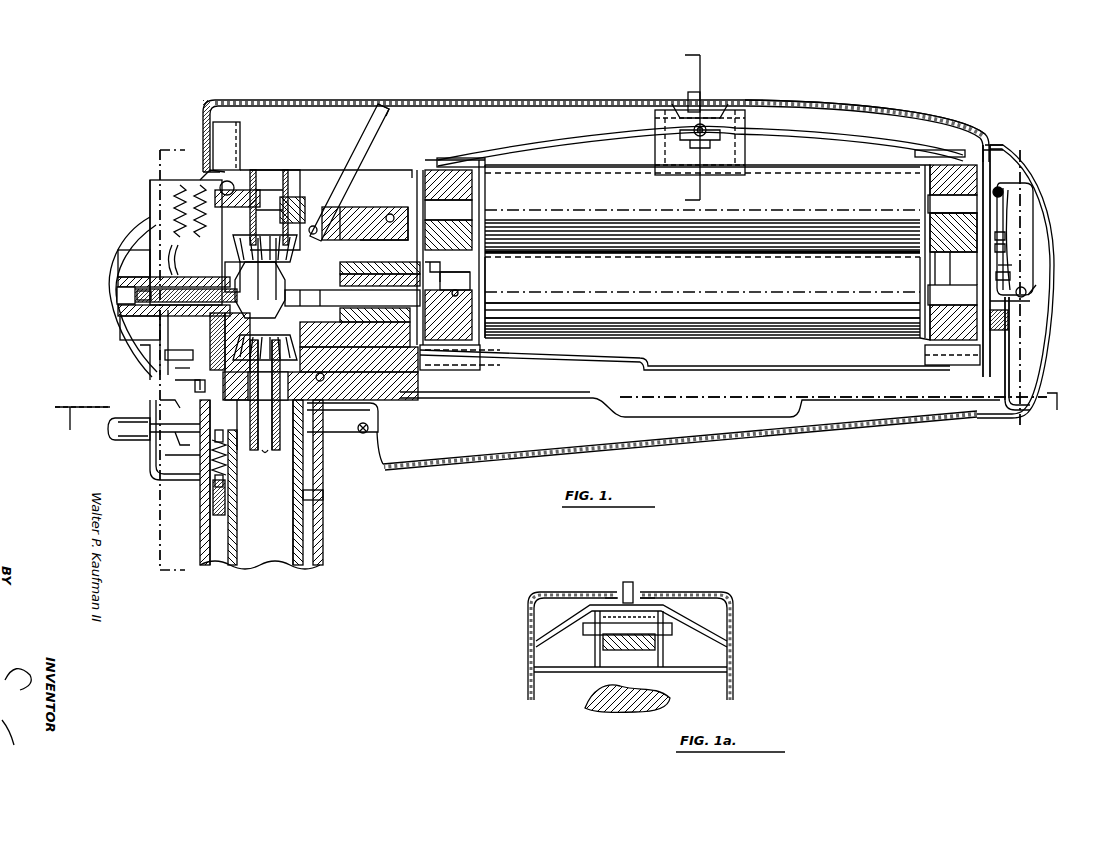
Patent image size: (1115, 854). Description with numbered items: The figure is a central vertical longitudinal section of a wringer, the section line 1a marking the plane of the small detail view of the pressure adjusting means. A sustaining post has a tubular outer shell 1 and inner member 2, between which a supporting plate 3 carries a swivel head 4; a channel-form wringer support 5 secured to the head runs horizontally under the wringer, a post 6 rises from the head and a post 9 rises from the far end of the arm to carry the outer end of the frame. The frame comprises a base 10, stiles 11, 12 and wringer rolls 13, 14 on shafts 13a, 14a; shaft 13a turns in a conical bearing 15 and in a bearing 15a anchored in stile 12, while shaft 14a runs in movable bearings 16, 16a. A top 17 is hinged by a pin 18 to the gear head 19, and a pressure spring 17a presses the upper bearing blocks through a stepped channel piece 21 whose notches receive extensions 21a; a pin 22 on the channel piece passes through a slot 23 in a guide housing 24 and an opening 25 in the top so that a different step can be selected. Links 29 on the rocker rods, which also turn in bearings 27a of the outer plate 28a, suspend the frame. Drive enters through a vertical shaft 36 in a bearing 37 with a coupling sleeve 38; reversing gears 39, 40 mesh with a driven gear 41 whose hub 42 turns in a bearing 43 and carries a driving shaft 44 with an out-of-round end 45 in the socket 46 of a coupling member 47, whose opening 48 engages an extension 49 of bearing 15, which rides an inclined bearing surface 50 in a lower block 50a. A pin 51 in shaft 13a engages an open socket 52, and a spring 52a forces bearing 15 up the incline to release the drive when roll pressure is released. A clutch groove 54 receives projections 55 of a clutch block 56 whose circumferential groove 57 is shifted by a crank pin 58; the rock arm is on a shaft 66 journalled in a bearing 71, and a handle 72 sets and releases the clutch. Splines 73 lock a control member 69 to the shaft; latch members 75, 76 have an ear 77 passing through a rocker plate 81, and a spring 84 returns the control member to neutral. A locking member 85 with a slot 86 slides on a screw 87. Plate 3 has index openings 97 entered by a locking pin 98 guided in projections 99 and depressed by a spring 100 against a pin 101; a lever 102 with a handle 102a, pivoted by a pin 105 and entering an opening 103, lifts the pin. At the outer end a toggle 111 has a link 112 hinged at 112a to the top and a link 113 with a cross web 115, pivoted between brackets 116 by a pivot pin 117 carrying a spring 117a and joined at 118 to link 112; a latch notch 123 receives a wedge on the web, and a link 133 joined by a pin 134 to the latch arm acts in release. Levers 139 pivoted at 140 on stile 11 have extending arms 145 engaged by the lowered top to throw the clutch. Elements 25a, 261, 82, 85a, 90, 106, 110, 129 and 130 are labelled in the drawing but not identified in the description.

In FIG. 1, the outer shell 1 is at (325, 545).
In FIG. 1, the inner member 2 is at (555, 416).
In FIG. 1, the supporting plate 3 is at (323, 495).
In FIG. 1, the swivel head 4 is at (305, 440).
In FIG. 1, the wringer support 5 is at (455, 470).
In FIG. 1, the post 6 is at (200, 470).
In FIG. 1, the post 9 is at (1012, 382).
In FIG. 1, the base 10 is at (585, 358).
In FIG. 1, the stile 11 is at (458, 158).
In FIG. 1, the stile 12 is at (930, 152).
In FIG. 1, the wringer roll 13 is at (690, 318).
In FIG. 1, the shaft 13a is at (935, 295).
In FIG. 1, the wringer roll 14 is at (770, 178).
In FIG. 1, the shaft 14a is at (940, 202).
In FIG. 1, the bearing 15 is at (472, 270).
In FIG. 1, the bearing 15a is at (940, 345).
In FIG. 1, the movable bearing 16 is at (472, 235).
In FIG. 1, the movable bearing 16a is at (935, 222).
In FIG. 1, the top 17 is at (838, 100).
In FIG. 1, the pressure spring 17a is at (582, 145).
In FIG. 1, the pin 18 is at (234, 182).
In FIG. 1, the gear head 19 is at (290, 195).
In FIG. 1, the channel piece 21 is at (655, 121).
In FIG. 1a, the channel piece 21 is at (585, 670).
In FIG. 1a, the extensions 21a is at (583, 635).
In FIG. 1, the pin 22 is at (698, 92).
In FIG. 1a, the pin 22 is at (632, 584).
In FIG. 1, the slot 23 is at (704, 125).
In FIG. 1a, the slot 23 is at (645, 598).
In FIG. 1, the guide housing 24 is at (728, 108).
In FIG. 1a, the guide housing 24 is at (672, 614).
In FIG. 1, the opening 25 is at (702, 124).
In FIG. 1a, the opening 25 is at (620, 598).
In FIG. 1, the link 25a is at (175, 371).
In FIG. 1, the frame plate 261 is at (535, 365).
In FIG. 1, the bearings 27a is at (1000, 375).
In FIG. 1, the plate 28a is at (984, 360).
In FIG. 1, the links 29 is at (162, 372).
In FIG. 1, the vertical shaft 36 is at (280, 380).
In FIG. 1, the bearing 37 is at (290, 398).
In FIG. 1, the coupling sleeve 38 is at (282, 414).
In FIG. 1, the reversing gear 39 is at (324, 380).
In FIG. 1, the reversing gear 40 is at (305, 205).
In FIG. 1, the driven gear 41 is at (340, 218).
In FIG. 1, the hub 42 is at (348, 228).
In FIG. 1, the bearing 43 is at (375, 218).
In FIG. 1, the driving shaft 44 is at (380, 264).
In FIG. 1, the out-of-round end 45 is at (335, 296).
In FIG. 1, the out-of-round socket 46 is at (380, 277).
In FIG. 1, the coupling member 47 is at (355, 333).
In FIG. 1, the out-of-round opening 48 is at (375, 316).
In FIG. 1, the extension 49 is at (431, 267).
In FIG. 1, the inclined bearing surface 50 is at (488, 303).
In FIG. 1, the lower block 50a is at (488, 319).
In FIG. 1, the pin 51 is at (460, 292).
In FIG. 1, the open socket 52 is at (470, 278).
In FIG. 1, the spring 52a is at (450, 262).
In FIG. 1, the clutch groove 54 is at (264, 248).
In FIG. 1, the projections 55 is at (260, 269).
In FIG. 1, the clutch block 56 is at (265, 339).
In FIG. 1, the circumferential groove 57 is at (232, 274).
In FIG. 1, the crank pin 58 is at (260, 291).
In FIG. 1, the shaft 66 is at (174, 248).
In FIG. 1, the control member 69 is at (134, 263).
In FIG. 1, the bearing 71 is at (230, 343).
In FIG. 1, the handle 72 is at (115, 262).
In FIG. 1, the splines 73 is at (177, 295).
In FIG. 1, the latch member 75 is at (150, 240).
In FIG. 1, the latch member 76 is at (170, 252).
In FIG. 1, the ear 77 is at (150, 332).
In FIG. 1, the rocker plate 81 is at (125, 352).
In FIG. 1, the spring 82 is at (198, 215).
In FIG. 1, the spring 84 is at (178, 200).
In FIG. 1, the locking member 85 is at (175, 385).
In FIG. 1, the link end 85a is at (198, 177).
In FIG. 1, the slot 86 is at (185, 388).
In FIG. 1, the screw 87 is at (160, 403).
In FIG. 1, the slide 90 is at (170, 355).
In FIG. 1, the index openings 97 is at (200, 520).
In FIG. 1, the locking pin 98 is at (228, 520).
In FIG. 1, the projections 99 is at (165, 456).
In FIG. 1, the spring 100 is at (212, 458).
In FIG. 1, the pin 101 is at (226, 490).
In FIG. 1, the lever 102 is at (130, 438).
In FIG. 1, the handle 102a is at (134, 434).
In FIG. 1, the opening 103 is at (244, 460).
In FIG. 1, the pin 105 is at (175, 438).
In FIG. 1, the section line 106 is at (86, 406).
In FIG. 1, the nut 110 is at (173, 293).
In FIG. 1, the toggle 111 is at (1022, 186).
In FIG. 1, the link 112 is at (1012, 276).
In FIG. 1, the hinge 112a is at (995, 145).
In FIG. 1, the link 113 is at (1025, 215).
In FIG. 1, the cross web 115 is at (1010, 236).
In FIG. 1, the brackets 116 is at (998, 186).
In FIG. 1, the pivot pin 117 is at (1025, 165).
In FIG. 1, the spring 117a is at (1020, 200).
In FIG. 1, the pivotal connection 118 is at (1026, 291).
In FIG. 1, the latch notch 123 is at (1030, 302).
In FIG. 1, the pin 129 is at (1008, 248).
In FIG. 1, the bearing 130 is at (985, 250).
In FIG. 1, the link 133 is at (1010, 265).
In FIG. 1, the pin 134 is at (1036, 290).
In FIG. 1, the levers 139 is at (380, 128).
In FIG. 1, the pivot connection 140 is at (350, 198).
In FIG. 1, the extending arms 145 is at (374, 108).
In FIG. 1, the section line 1a is at (688, 197).